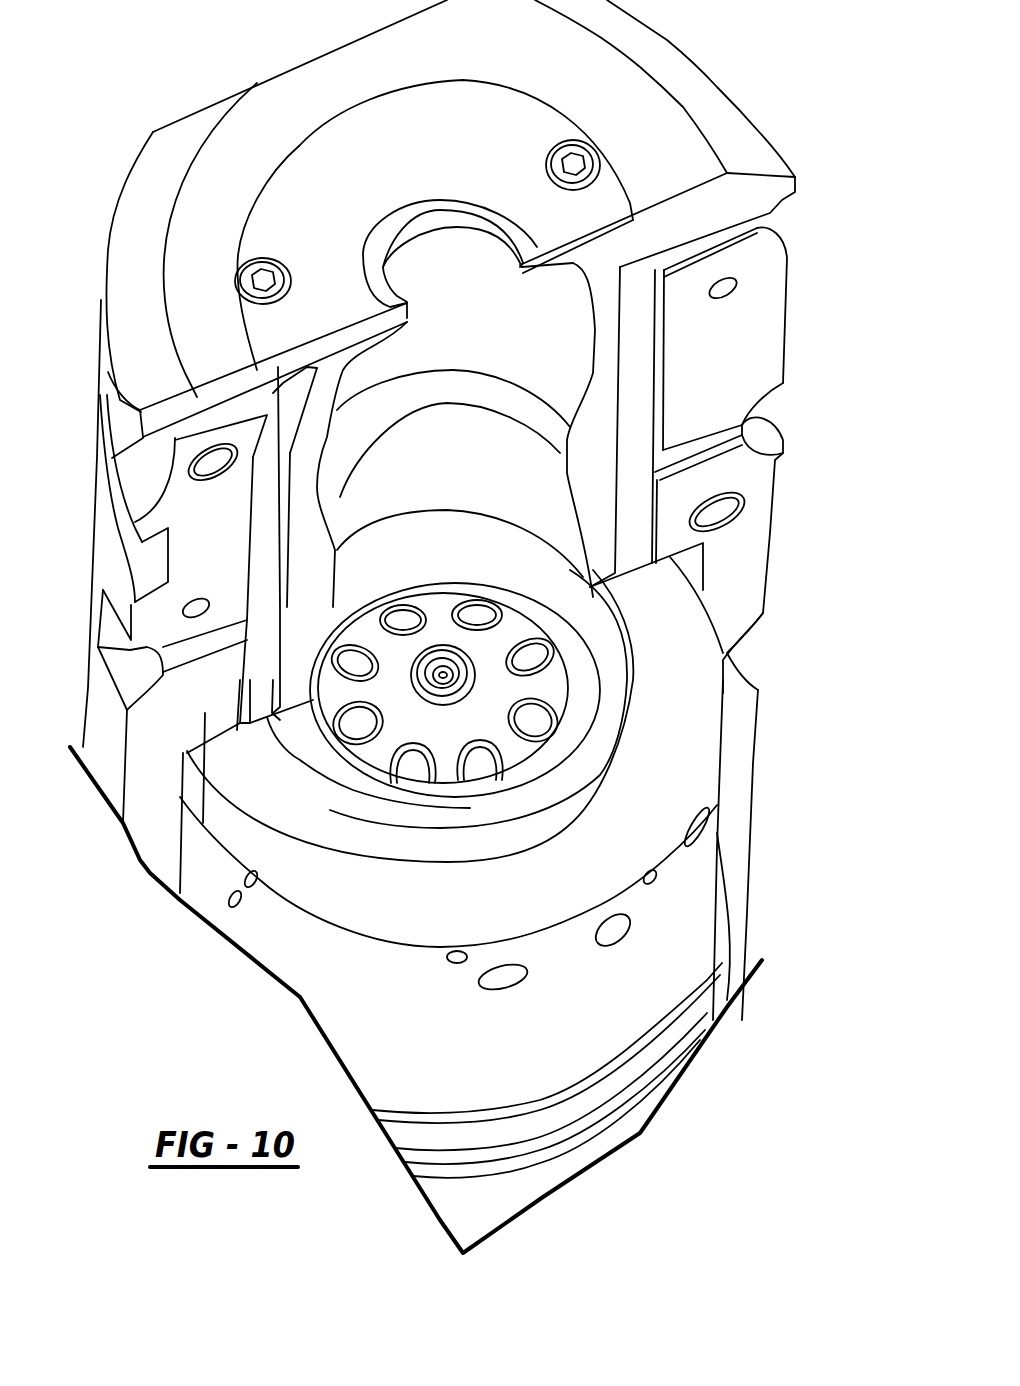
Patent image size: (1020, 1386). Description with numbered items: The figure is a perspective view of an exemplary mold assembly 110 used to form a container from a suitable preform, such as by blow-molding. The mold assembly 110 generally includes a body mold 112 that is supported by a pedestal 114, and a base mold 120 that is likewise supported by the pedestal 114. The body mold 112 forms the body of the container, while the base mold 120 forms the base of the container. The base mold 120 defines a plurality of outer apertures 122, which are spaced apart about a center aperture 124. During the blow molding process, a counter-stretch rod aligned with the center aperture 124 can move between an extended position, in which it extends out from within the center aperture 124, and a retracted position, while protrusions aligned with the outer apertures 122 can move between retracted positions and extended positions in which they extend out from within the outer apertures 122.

The mold assembly 110 is at (88, 140).
The body mold 112 is at (573, 340).
The pedestal 114 is at (415, 1025).
The base mold 120 is at (493, 690).
The outer apertures 122 is at (513, 661).
The center aperture 124 is at (437, 687).